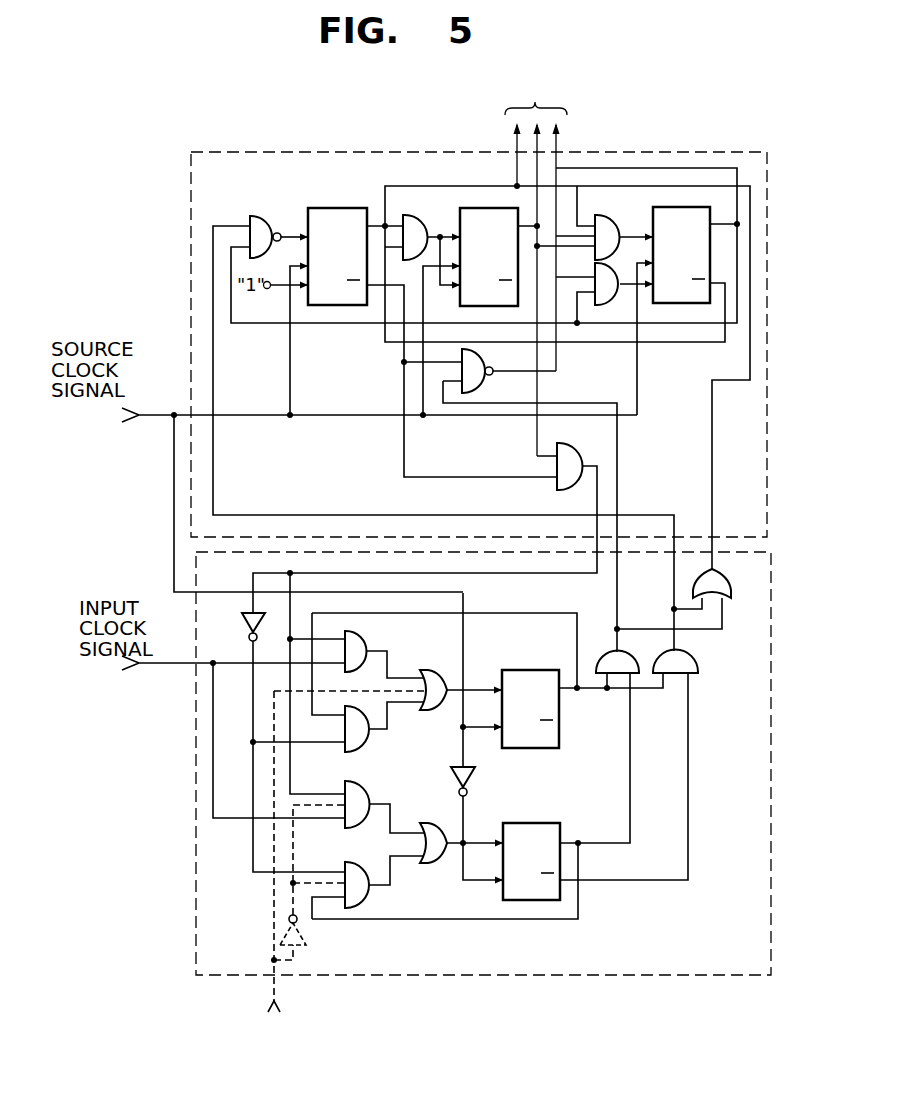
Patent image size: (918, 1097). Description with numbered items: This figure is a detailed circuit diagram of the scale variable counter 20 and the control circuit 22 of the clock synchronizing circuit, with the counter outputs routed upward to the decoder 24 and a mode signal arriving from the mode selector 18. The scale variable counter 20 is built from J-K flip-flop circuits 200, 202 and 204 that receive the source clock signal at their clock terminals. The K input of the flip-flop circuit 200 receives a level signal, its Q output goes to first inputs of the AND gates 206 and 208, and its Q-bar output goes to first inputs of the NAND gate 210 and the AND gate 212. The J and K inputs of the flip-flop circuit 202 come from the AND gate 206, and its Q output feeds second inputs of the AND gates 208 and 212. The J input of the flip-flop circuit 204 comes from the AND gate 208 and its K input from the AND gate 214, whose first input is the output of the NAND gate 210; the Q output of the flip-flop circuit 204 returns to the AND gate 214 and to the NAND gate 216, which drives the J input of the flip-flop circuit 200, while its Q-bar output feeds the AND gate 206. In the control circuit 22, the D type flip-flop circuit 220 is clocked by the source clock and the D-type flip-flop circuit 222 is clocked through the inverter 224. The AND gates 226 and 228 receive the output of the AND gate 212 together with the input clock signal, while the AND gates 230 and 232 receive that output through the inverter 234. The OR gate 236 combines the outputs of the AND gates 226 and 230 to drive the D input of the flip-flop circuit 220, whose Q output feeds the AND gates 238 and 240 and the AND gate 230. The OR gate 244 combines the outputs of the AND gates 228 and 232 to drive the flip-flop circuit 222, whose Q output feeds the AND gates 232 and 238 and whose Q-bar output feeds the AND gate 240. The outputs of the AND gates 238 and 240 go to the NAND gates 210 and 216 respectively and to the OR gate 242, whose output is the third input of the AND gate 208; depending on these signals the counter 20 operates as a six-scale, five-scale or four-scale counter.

The mode selector 18 is at (295, 1044).
The scale variable counter 20 is at (185, 256).
The control circuit 22 is at (555, 979).
The decoder 24 is at (548, 252).
The J-K flip-flop circuit 200 is at (338, 208).
The J-K flip-flop circuit 202 is at (483, 208).
The J-K flip-flop circuit 204 is at (672, 305).
The AND gate 206 is at (422, 222).
The AND gate 208 is at (612, 222).
The NAND gate 210 is at (480, 382).
The AND gate 212 is at (576, 452).
The AND gate 214 is at (602, 303).
The NAND gate 216 is at (258, 215).
The D type flip-flop circuit 220 is at (542, 747).
The D-type flip-flop circuit 222 is at (535, 823).
The inverter 224 is at (471, 780).
The AND gate 226 is at (364, 642).
The AND gate 228 is at (365, 798).
The AND gate 230 is at (355, 740).
The AND gate 232 is at (358, 893).
The inverter 234 is at (246, 626).
The OR gate 236 is at (430, 705).
The AND gate 238 is at (610, 680).
The AND gate 240 is at (668, 680).
The OR gate 242 is at (715, 592).
The OR gate 244 is at (432, 858).